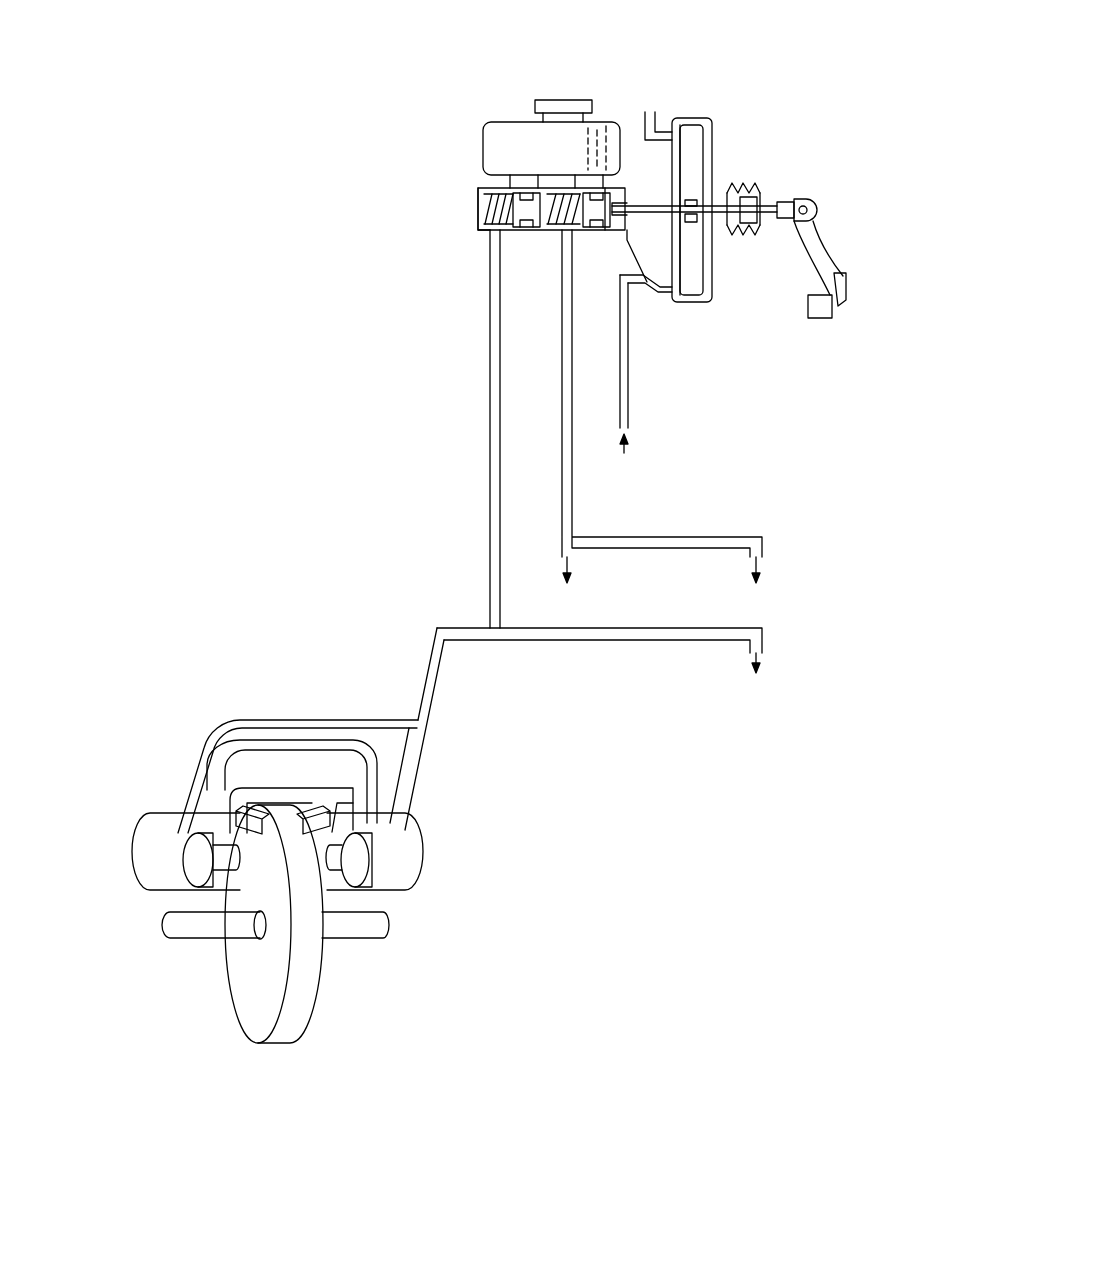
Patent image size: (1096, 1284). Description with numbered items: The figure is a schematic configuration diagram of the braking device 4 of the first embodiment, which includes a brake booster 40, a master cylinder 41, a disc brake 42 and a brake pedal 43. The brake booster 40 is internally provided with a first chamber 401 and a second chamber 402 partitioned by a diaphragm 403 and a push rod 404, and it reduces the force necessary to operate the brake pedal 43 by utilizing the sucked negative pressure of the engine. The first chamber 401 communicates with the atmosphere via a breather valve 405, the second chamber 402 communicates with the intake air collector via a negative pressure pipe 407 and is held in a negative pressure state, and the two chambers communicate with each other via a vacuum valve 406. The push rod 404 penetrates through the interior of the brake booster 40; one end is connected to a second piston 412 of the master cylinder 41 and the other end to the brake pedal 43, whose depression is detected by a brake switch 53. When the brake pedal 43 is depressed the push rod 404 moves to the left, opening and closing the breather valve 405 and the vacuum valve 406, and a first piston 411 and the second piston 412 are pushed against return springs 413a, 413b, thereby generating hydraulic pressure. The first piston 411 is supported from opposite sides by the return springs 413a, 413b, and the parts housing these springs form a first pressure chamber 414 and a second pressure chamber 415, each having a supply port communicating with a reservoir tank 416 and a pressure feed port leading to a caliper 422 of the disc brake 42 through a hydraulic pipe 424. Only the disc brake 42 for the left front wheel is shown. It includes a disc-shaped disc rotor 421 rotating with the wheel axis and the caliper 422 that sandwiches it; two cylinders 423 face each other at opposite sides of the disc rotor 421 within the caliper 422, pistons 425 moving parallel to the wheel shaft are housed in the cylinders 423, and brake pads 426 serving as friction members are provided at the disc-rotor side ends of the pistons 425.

The braking device 4 is at (796, 80).
The brake booster 40 is at (711, 108).
The master cylinder 41 is at (480, 180).
The disc brake 42 is at (177, 704).
The brake pedal 43 is at (817, 252).
The brake switch 53 is at (818, 318).
The first chamber 401 is at (698, 273).
The second chamber 402 is at (655, 273).
The diaphragm 403 is at (682, 140).
The push rod 404 is at (645, 206).
The breather valve 405 is at (747, 186).
The vacuum valve 406 is at (700, 203).
The negative pressure pipe 407 is at (630, 400).
The first piston 411 is at (527, 218).
The second piston 412 is at (600, 230).
The return spring 413a is at (478, 205).
The return spring 413b is at (585, 212).
The first pressure chamber 414 is at (487, 230).
The second pressure chamber 415 is at (557, 220).
The reservoir tank 416 is at (518, 122).
The disc rotor 421 is at (307, 1027).
The caliper 422 is at (140, 822).
The cylinder 423 is at (160, 874).
The hydraulic pipe 424 is at (563, 318).
The piston 425 is at (190, 855).
The brake pad 426 is at (263, 803).